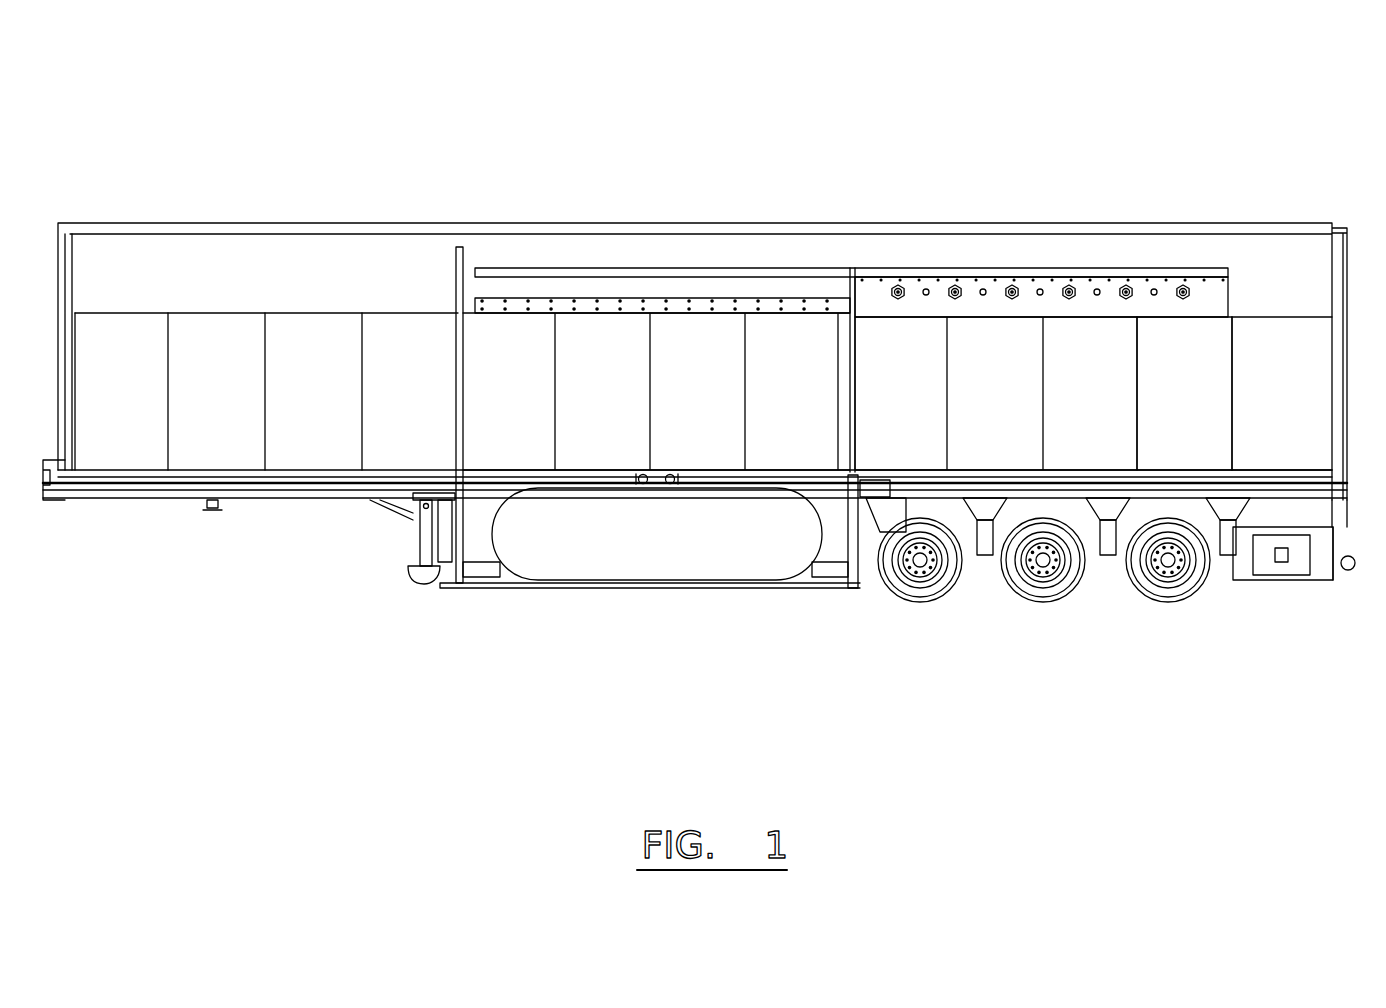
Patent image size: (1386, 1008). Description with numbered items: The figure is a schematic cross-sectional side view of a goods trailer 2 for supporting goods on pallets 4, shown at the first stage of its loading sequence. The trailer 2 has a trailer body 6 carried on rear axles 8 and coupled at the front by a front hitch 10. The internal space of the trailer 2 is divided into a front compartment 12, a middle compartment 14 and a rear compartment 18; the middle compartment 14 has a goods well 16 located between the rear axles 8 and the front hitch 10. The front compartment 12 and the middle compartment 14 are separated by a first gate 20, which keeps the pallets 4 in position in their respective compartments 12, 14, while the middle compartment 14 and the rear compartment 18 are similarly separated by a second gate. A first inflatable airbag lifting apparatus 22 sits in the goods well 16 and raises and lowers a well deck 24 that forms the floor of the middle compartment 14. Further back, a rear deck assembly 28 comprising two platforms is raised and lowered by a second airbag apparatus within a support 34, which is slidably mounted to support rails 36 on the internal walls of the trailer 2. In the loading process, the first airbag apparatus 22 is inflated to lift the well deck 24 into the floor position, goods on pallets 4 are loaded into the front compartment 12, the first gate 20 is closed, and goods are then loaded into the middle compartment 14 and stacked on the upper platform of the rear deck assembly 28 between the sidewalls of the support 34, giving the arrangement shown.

The goods trailer 2 is at (528, 207).
The pallets 4 is at (122, 352).
The trailer body 6 is at (808, 224).
The rear axles 8 is at (920, 598).
The front hitch 10 is at (217, 509).
The front compartment 12 is at (207, 282).
The middle compartment 14 is at (595, 292).
The goods well 16 is at (478, 548).
The rear compartment 18 is at (1290, 284).
The first gate 20 is at (455, 287).
The first inflatable airbag lifting apparatus 22 is at (645, 550).
The well deck 24 is at (568, 548).
The rear deck assembly 28 is at (1182, 441).
The support 34 is at (1203, 298).
The support rails 36 is at (752, 296).